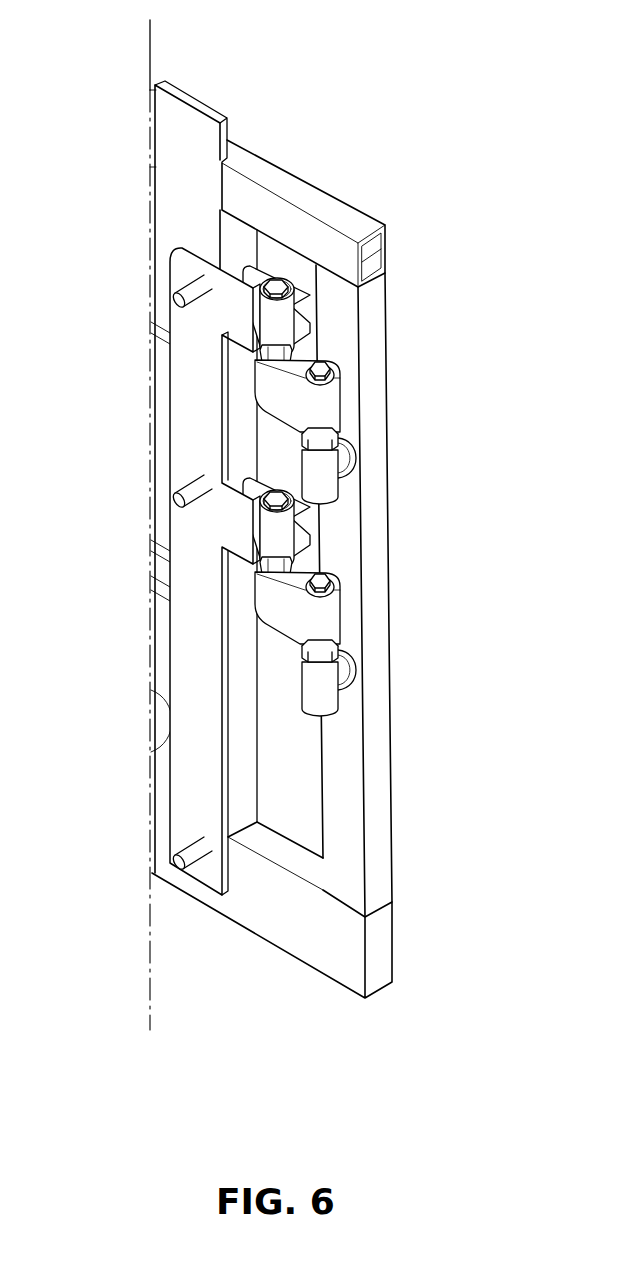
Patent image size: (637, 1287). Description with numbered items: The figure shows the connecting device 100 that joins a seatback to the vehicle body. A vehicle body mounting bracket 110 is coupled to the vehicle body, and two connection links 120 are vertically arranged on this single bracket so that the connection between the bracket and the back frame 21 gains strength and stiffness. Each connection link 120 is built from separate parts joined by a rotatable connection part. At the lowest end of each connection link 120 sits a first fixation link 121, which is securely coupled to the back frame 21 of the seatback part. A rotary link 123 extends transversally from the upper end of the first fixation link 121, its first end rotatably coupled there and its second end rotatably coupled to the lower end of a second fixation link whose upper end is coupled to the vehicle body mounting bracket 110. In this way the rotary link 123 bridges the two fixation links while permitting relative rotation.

The back frame 21 is at (288, 185).
The connecting device 100 is at (163, 416).
The vehicle body mounting bracket 110 is at (205, 657).
The connection link 120 is at (281, 571).
The first fixation link 121 is at (327, 484).
The rotary link 123 is at (313, 409).